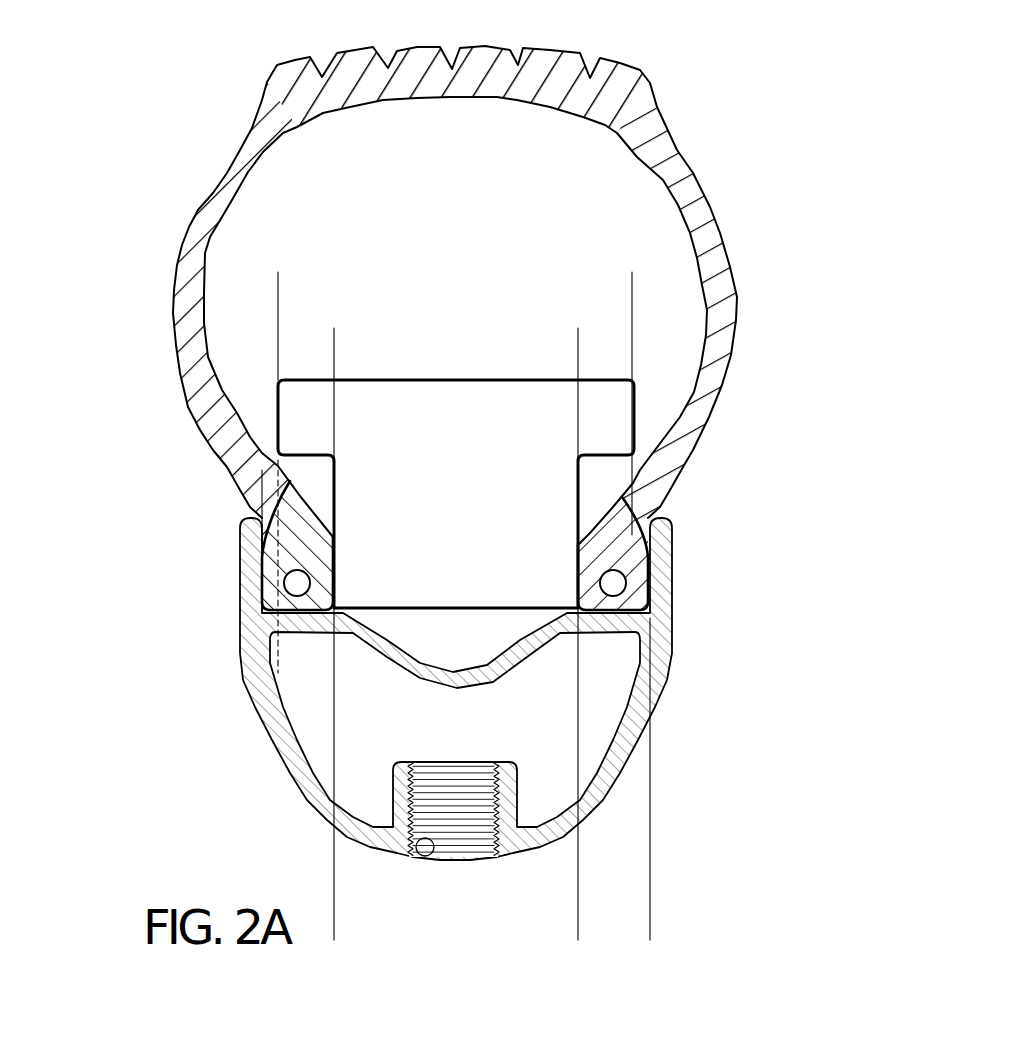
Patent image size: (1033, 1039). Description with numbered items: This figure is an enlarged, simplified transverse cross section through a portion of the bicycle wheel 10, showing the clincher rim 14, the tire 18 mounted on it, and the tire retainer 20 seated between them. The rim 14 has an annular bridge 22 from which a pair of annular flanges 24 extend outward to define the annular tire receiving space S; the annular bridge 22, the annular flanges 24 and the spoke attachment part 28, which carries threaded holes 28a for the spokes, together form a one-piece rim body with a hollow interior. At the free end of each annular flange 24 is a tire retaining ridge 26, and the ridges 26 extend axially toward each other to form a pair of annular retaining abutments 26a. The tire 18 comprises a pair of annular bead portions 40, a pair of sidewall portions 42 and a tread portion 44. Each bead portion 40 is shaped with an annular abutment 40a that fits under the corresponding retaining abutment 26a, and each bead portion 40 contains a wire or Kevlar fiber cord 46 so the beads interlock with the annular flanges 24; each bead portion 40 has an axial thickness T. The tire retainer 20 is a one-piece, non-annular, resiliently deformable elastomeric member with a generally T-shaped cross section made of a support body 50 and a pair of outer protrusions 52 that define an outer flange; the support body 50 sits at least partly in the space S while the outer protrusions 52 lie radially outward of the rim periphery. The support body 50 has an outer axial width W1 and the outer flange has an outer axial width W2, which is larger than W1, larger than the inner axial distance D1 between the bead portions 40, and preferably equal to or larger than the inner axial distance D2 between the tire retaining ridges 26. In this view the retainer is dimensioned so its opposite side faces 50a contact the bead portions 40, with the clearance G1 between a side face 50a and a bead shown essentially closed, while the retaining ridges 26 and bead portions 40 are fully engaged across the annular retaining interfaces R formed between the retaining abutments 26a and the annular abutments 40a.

The wheel assembly 10 is at (712, 118).
The clincher rim 14 is at (283, 760).
The tire 18 is at (702, 168).
The tire retainer 20 is at (650, 385).
The annular bridge 22 is at (535, 668).
The annular flanges 24 is at (240, 603).
The tire retaining ridge 26 is at (248, 520).
The annular retaining abutments 26a is at (292, 570).
The spoke attachment part 28 is at (325, 820).
The threaded holes 28a is at (421, 854).
The annular bead portions 40 is at (268, 655).
The annular abutment 40a is at (248, 543).
The sidewall portions 42 is at (193, 217).
The tread portion 44 is at (420, 48).
The wire or Kevlar fiber cord 46 is at (334, 588).
The support body 50 is at (586, 600).
The side faces 50a is at (278, 450).
The outer protrusions 52 is at (278, 403).
The annular tire receiving space S is at (440, 639).
The annular retaining interfaces R is at (248, 478).
The gap G1 is at (286, 467).
The outer axial width of the support body W1 is at (564, 340).
The outer axial width of the outer flange W2 is at (618, 286).
The inner axial distance between the bead portions D1 is at (564, 922).
The inner axial distance between the tire retaining ridges D2 is at (618, 478).
The axial thickness T is at (636, 922).